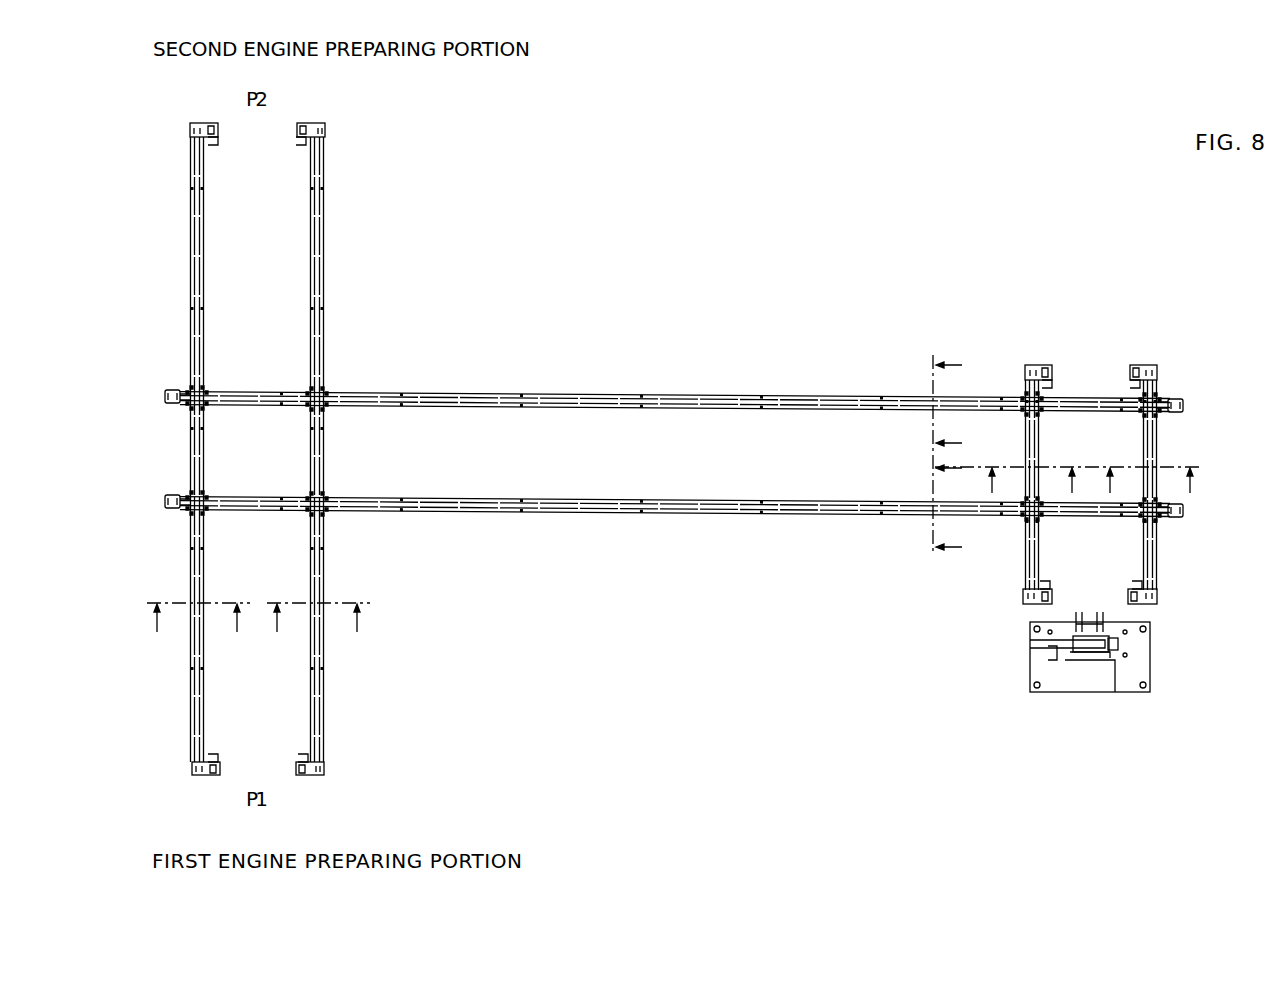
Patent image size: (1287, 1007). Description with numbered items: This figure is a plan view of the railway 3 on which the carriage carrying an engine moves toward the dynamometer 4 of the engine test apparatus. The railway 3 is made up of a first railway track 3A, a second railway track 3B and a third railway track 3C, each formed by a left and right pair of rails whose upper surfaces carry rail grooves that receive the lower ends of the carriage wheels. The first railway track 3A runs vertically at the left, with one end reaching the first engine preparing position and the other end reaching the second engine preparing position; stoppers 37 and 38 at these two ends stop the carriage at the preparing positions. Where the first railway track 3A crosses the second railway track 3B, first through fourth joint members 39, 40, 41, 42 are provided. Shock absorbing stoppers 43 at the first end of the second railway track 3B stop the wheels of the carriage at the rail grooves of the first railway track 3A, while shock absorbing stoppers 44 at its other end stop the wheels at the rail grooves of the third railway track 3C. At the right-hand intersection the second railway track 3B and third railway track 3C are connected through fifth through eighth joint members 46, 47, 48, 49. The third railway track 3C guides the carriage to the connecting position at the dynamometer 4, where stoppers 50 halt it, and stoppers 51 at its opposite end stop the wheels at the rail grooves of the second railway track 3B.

The railway 3 is at (684, 312).
The first railway track 3A is at (414, 648).
The second railway track 3B is at (712, 568).
The third railway track 3C is at (918, 563).
The dynamometer 4 is at (1030, 668).
The stopper 37 is at (204, 778).
The stopper 38 is at (204, 122).
The first joint member 39 is at (325, 495).
The second joint member 40 is at (325, 390).
The third joint member 41 is at (205, 495).
The fourth joint member 42 is at (205, 390).
The shock absorbing stopper 43 is at (166, 500).
The shock absorbing stopper 44 is at (1184, 406).
The fifth joint member 46 is at (1040, 515).
The sixth joint member 47 is at (1160, 518).
The seventh joint member 48 is at (1042, 400).
The eighth joint member 49 is at (1160, 400).
The stopper 50 is at (1028, 606).
The stopper 51 is at (1038, 364).